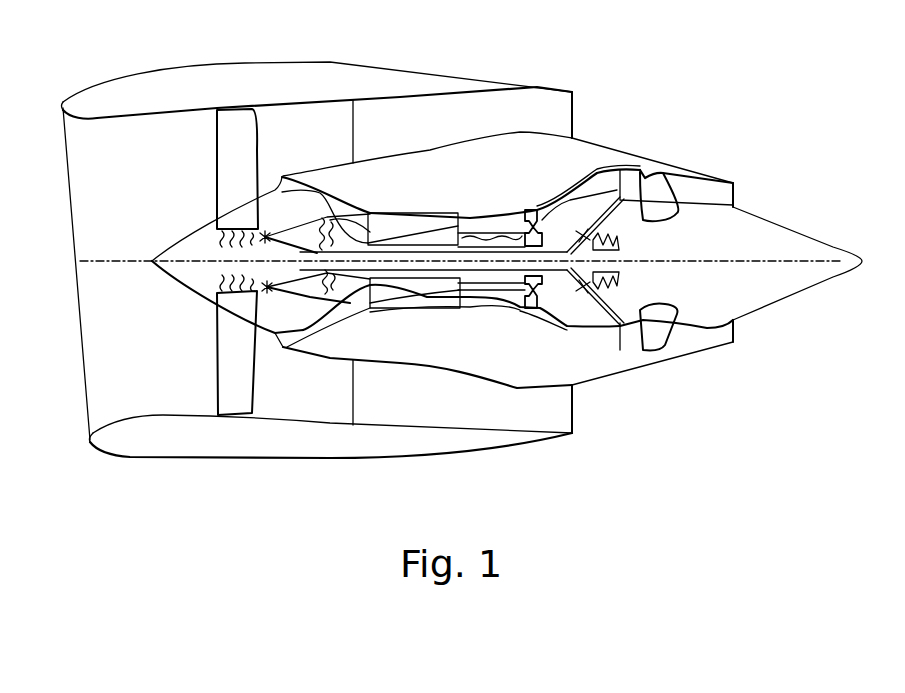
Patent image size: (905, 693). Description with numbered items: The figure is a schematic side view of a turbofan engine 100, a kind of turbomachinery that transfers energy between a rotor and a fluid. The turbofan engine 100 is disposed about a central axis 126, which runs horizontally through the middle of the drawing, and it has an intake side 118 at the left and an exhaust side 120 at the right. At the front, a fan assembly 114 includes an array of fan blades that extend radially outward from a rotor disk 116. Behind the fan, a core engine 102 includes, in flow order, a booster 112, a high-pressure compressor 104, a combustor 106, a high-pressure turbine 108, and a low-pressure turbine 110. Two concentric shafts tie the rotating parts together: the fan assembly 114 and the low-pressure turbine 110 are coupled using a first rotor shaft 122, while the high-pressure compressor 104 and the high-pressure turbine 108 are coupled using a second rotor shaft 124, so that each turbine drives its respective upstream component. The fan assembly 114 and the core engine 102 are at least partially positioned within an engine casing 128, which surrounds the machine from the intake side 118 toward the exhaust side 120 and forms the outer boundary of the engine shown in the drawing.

The turbofan engine 100 is at (505, 41).
The core engine 102 is at (490, 147).
The high-pressure compressor 104 is at (383, 220).
The combustor 106 is at (503, 220).
The high-pressure turbine 108 is at (532, 215).
The low-pressure turbine 110 is at (593, 183).
The booster 112 is at (308, 190).
The fan assembly 114 is at (232, 157).
The rotor disk 116 is at (237, 308).
The intake side 118 is at (48, 130).
The exhaust side 120 is at (604, 101).
The first rotor shaft 122 is at (473, 252).
The second rotor shaft 124 is at (507, 310).
The central axis 126 is at (107, 250).
The engine casing 128 is at (237, 80).